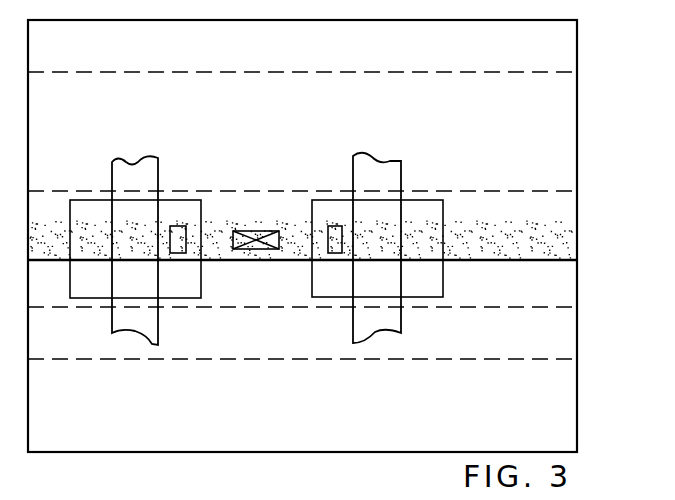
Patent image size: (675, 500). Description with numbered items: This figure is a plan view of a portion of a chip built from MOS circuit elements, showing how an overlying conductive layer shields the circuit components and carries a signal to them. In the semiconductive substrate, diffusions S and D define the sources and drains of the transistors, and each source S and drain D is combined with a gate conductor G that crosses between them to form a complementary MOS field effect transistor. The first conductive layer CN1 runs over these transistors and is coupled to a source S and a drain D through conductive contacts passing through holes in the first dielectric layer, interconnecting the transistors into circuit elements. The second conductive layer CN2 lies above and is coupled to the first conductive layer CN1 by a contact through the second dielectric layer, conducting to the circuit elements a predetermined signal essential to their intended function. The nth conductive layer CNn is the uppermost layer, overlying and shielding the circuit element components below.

The nth conductive layer CNn is at (569, 98).
The first conductive layer CN1 is at (558, 205).
The second conductive layer CN2 is at (566, 226).
The source S is at (256, 249).
The drain D is at (299, 261).
The gate conductor G is at (256, 249).